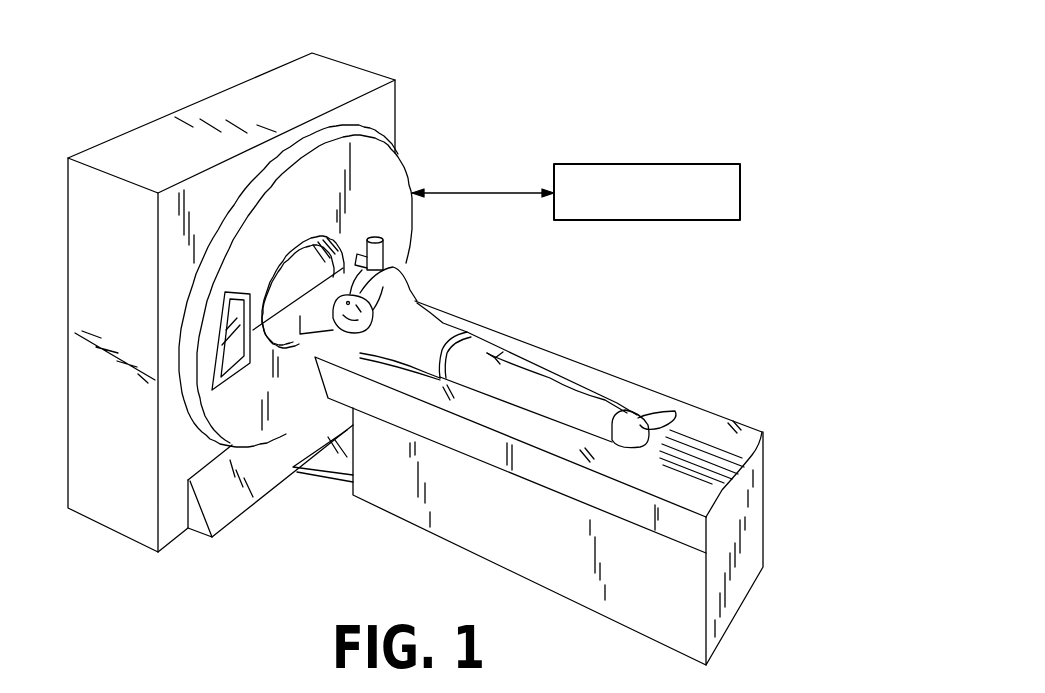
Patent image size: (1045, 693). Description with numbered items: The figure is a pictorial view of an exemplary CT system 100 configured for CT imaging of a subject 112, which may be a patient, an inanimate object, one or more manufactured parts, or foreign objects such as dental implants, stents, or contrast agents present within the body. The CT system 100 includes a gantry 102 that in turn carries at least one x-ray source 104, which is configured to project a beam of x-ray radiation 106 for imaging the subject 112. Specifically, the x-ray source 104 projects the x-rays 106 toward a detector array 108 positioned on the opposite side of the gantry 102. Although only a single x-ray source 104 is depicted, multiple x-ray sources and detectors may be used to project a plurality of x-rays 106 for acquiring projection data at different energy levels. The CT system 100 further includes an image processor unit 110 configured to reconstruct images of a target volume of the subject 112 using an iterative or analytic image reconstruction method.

The CT system 100 is at (682, 40).
The gantry 102 is at (391, 199).
The x-ray source 104 is at (383, 258).
The beam of x-ray radiation 106 is at (280, 307).
The detector array 108 is at (232, 367).
The image processor unit 110 is at (700, 164).
The subject 112 is at (425, 322).